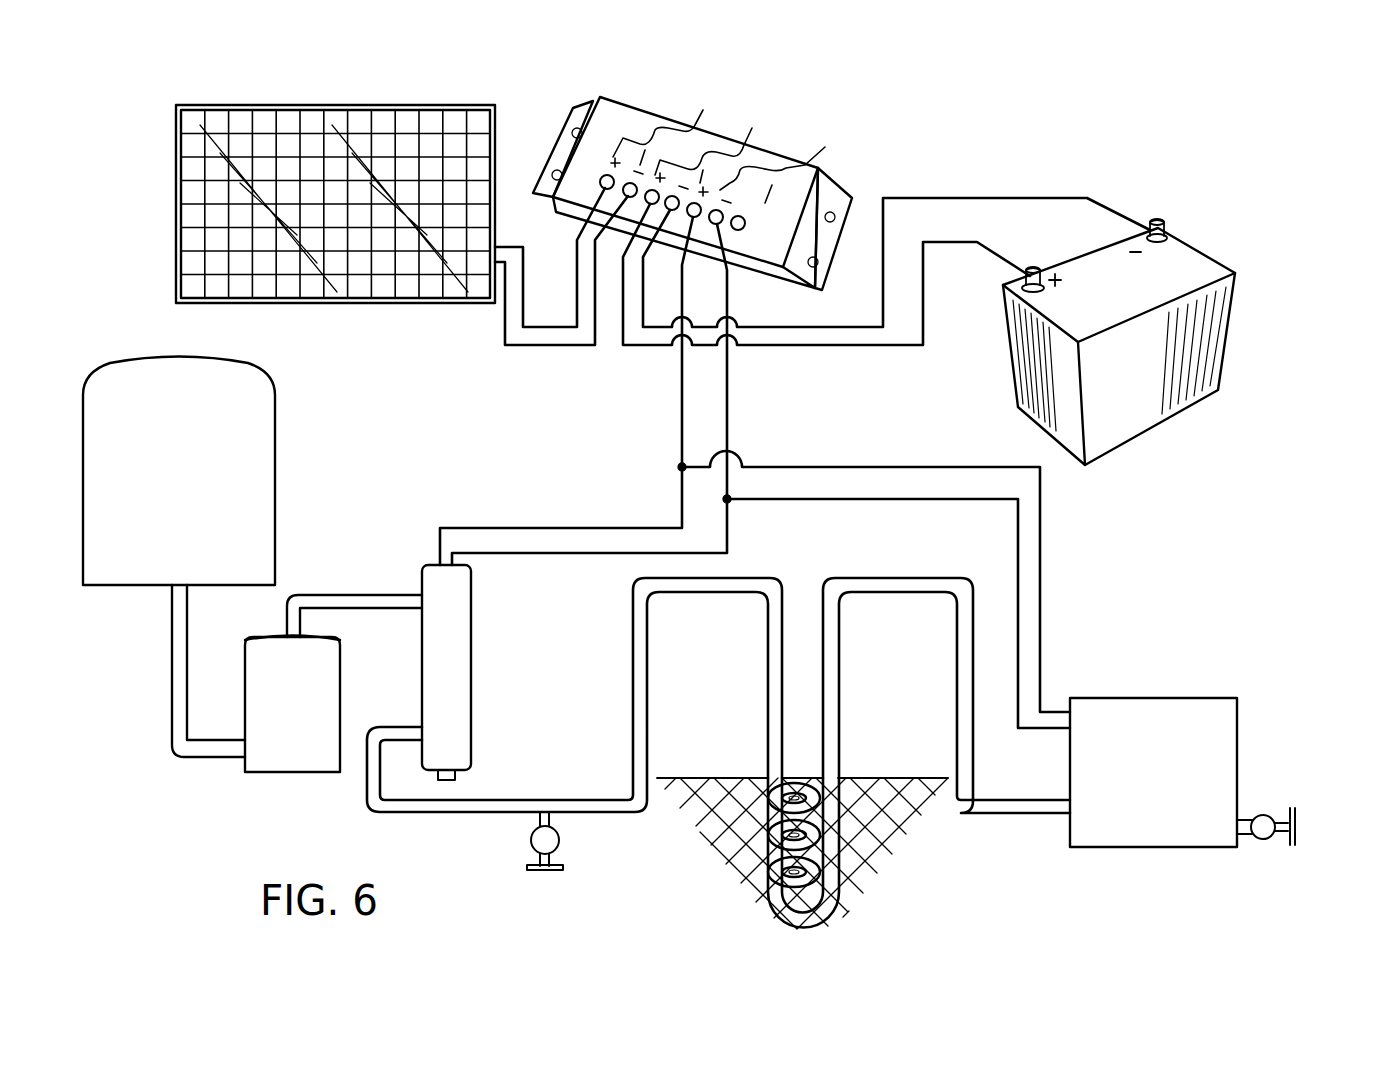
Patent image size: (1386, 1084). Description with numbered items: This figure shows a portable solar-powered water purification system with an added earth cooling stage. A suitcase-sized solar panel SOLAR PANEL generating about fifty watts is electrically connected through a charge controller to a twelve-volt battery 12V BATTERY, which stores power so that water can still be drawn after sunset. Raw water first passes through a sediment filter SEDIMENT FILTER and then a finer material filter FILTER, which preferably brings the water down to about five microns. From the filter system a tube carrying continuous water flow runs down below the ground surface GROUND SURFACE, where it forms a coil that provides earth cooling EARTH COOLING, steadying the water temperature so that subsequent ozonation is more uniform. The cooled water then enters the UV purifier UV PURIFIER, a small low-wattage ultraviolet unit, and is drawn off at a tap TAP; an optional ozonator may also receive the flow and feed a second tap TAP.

The solar panel SOLAR PANEL is at (358, 261).
The battery 12V BATTERY is at (1142, 342).
The sediment filter SEDIMENT FILTER is at (179, 471).
The finer material filter FILTER is at (292, 704).
The UV purifier UV PURIFIER is at (516, 672).
The ground surface GROUND SURFACE is at (802, 748).
The earth cooling system EARTH COOLING is at (862, 853).
The tap TAP is at (932, 859).